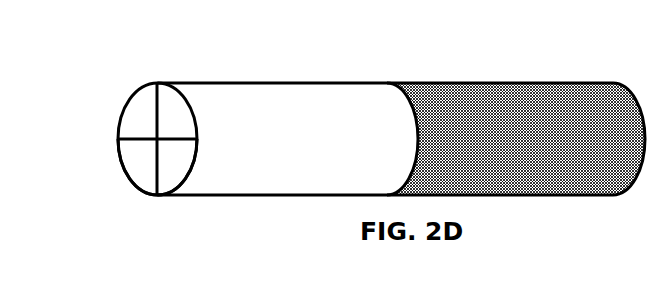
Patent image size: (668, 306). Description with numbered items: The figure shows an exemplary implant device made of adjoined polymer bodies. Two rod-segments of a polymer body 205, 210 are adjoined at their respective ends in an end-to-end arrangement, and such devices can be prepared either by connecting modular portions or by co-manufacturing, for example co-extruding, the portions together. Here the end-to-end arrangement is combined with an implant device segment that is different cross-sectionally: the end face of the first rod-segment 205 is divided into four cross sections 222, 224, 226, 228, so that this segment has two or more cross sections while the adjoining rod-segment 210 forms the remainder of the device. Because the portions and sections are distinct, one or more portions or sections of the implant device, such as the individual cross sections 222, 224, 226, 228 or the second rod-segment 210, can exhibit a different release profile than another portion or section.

The rod-segment of a polymer body 205 is at (270, 78).
The rod-segment of a polymer body 210 is at (507, 77).
The cross section 222 is at (170, 110).
The cross section 224 is at (140, 127).
The cross section 226 is at (140, 157).
The cross section 228 is at (170, 178).